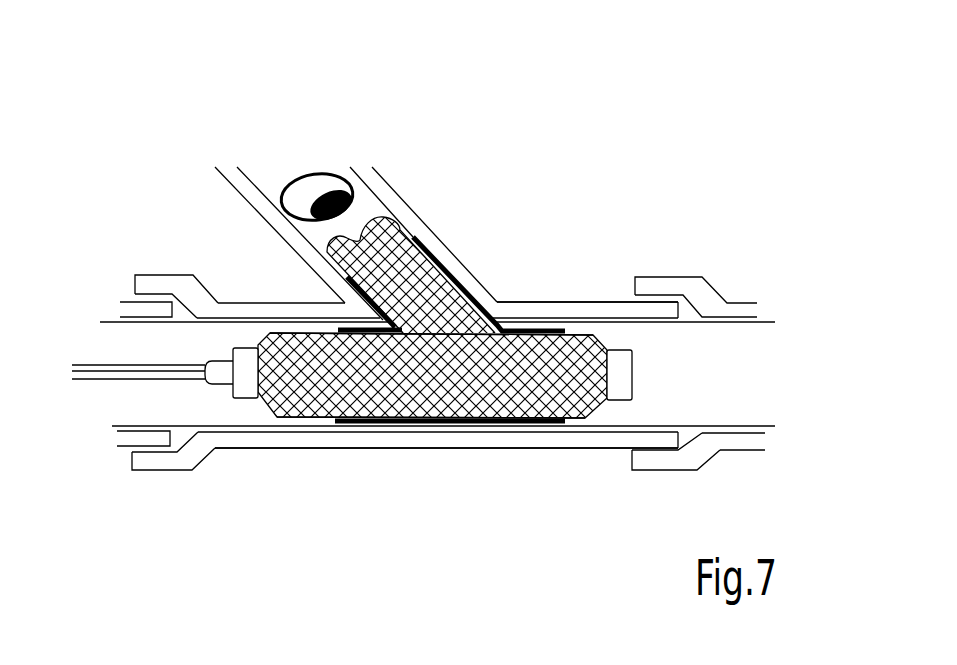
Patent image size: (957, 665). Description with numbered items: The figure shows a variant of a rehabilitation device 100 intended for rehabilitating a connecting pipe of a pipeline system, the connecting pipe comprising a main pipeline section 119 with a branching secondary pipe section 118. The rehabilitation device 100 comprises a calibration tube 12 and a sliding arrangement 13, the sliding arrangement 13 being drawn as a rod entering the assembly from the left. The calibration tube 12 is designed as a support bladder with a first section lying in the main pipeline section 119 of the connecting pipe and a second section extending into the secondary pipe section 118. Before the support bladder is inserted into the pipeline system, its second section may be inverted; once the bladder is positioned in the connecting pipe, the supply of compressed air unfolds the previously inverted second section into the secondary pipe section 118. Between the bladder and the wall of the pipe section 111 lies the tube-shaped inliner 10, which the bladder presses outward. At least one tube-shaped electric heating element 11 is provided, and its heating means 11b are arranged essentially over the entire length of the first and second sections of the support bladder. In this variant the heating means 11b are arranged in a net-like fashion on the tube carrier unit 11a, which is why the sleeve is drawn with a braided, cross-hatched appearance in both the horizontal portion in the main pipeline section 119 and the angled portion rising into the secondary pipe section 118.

The rehabilitation device 100 is at (758, 362).
The main pipeline section 119 is at (207, 405).
The secondary pipe section 118 is at (267, 183).
The tube-shaped inliner 10 is at (578, 320).
The sliding arrangement 13 is at (90, 372).
The tube-shaped electric heating element 11 is at (478, 332).
The tube carrier unit 11a is at (347, 367).
The heating means 11b is at (373, 392).
The calibration tube 12 is at (565, 428).
The pipe section 111 is at (435, 432).